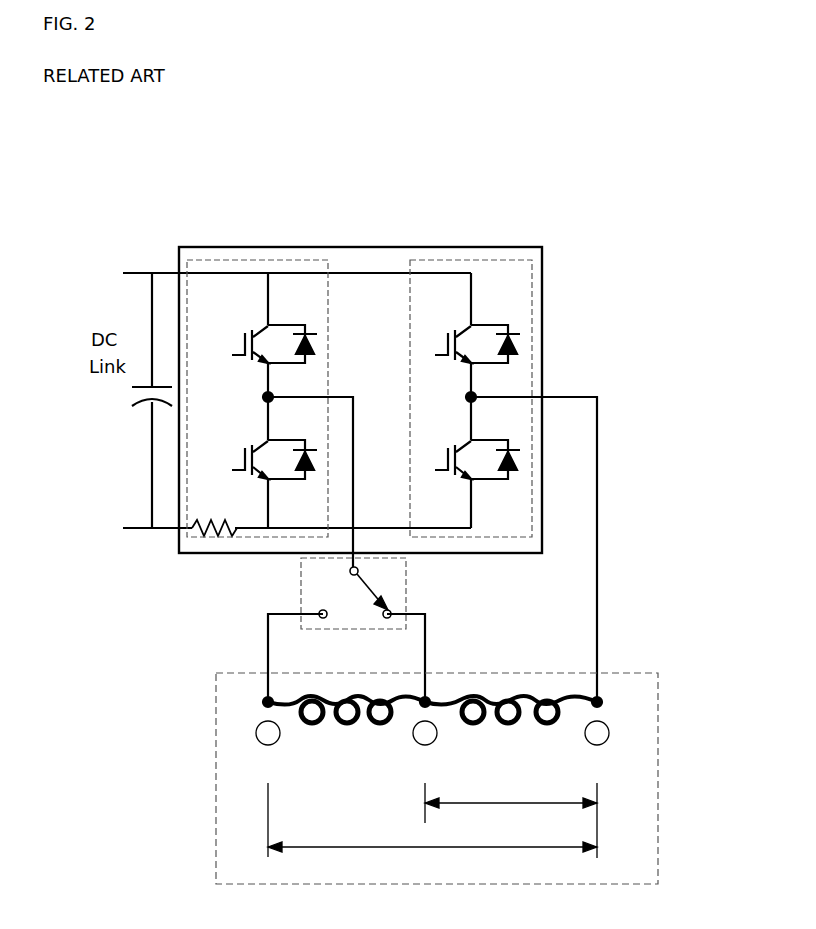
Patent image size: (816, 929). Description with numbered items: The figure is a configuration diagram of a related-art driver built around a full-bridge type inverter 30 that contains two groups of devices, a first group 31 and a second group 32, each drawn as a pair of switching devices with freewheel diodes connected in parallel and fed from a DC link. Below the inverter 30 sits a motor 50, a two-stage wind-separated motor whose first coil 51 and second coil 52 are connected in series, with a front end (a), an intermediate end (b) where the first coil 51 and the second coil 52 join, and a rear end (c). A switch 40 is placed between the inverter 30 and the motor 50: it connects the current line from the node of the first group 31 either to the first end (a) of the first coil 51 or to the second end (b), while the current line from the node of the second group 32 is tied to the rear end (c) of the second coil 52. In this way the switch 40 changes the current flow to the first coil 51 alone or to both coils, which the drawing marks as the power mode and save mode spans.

The full-bridge type inverter 30 is at (357, 247).
The first group 31 is at (260, 260).
The second group 32 is at (472, 260).
The switch 40 is at (406, 593).
The motor 50 is at (469, 762).
The first coil 51 is at (355, 702).
The second coil 52 is at (546, 699).